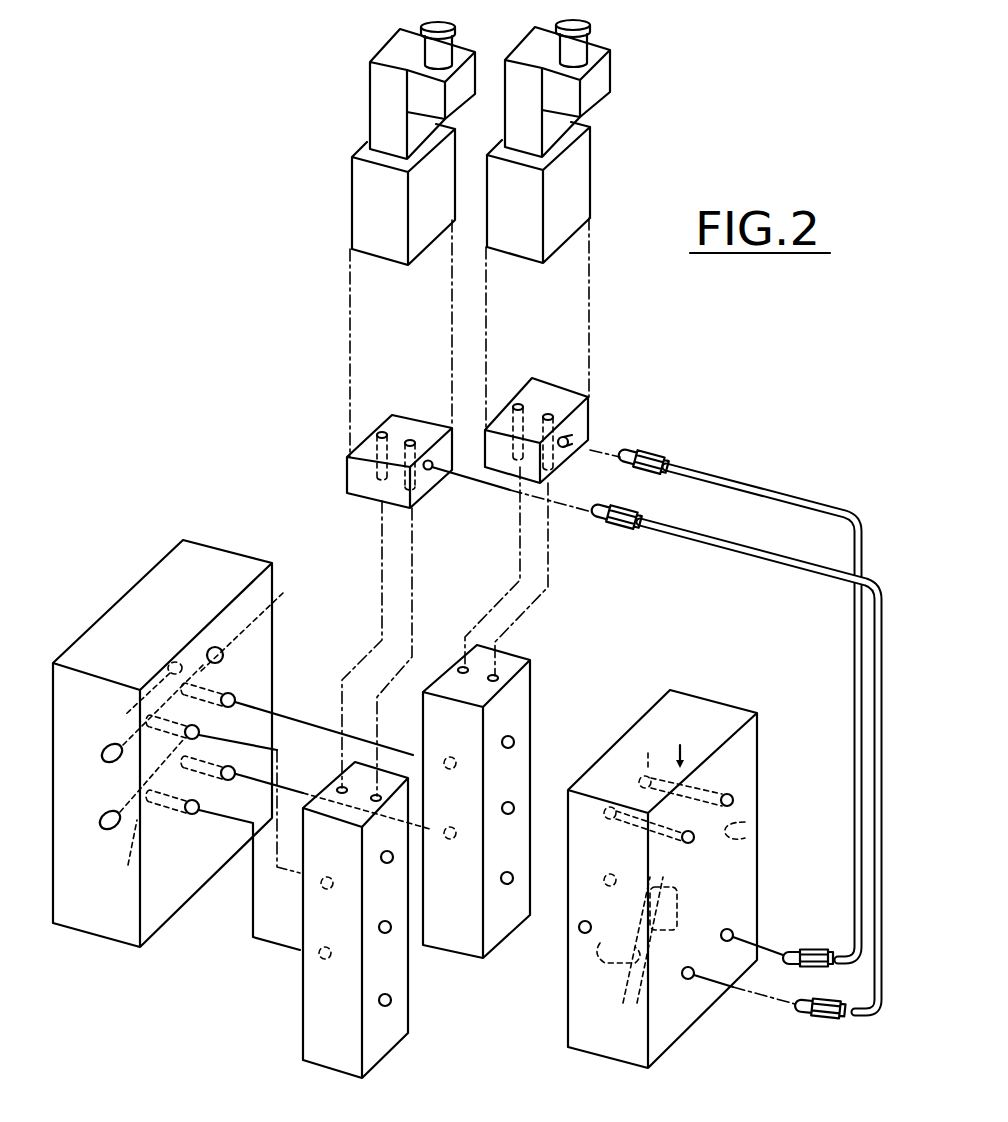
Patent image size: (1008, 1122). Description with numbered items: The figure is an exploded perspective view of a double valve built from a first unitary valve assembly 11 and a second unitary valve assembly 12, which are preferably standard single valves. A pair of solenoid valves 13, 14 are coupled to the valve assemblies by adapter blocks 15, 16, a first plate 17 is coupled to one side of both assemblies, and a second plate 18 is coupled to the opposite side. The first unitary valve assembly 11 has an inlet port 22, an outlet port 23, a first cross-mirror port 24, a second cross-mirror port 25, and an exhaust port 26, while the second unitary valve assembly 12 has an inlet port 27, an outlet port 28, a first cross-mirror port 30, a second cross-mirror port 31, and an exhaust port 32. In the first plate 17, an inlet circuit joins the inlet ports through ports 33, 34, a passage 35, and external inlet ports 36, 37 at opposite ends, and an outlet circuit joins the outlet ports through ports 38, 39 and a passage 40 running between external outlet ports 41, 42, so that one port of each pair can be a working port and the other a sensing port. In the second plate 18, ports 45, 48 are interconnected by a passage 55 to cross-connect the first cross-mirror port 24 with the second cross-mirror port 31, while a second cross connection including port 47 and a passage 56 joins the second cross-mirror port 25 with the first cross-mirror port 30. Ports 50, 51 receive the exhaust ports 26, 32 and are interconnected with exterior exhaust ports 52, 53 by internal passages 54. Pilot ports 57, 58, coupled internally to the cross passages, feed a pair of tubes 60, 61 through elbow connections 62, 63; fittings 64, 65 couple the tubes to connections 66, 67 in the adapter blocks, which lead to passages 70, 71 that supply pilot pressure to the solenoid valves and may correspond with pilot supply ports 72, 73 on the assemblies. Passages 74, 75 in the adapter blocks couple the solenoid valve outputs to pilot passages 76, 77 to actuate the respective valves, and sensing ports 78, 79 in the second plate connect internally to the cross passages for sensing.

The first unitary valve assembly 11 is at (390, 1052).
The second unitary valve assembly 12 is at (487, 948).
The solenoid valve 13 is at (350, 178).
The solenoid valve 14 is at (593, 153).
The adapter block 15 is at (345, 463).
The adapter block 16 is at (570, 387).
The first plate 17 is at (127, 598).
The second plate 18 is at (573, 1057).
The inlet port 22 is at (322, 958).
The outlet port 23 is at (327, 877).
The first cross-mirror port 24 is at (385, 994).
The second cross-mirror port 25 is at (385, 921).
The exhaust port 26 is at (387, 850).
The inlet port 27 is at (450, 827).
The outlet port 28 is at (450, 757).
The first cross-mirror port 30 is at (507, 872).
The second cross-mirror port 31 is at (514, 803).
The exhaust port 32 is at (514, 738).
The port 33 is at (196, 815).
The port 34 is at (236, 772).
The passage 35 is at (120, 860).
The external inlet port 36 is at (100, 828).
The external inlet port 37 is at (236, 698).
The port 38 is at (212, 725).
The port 39 is at (223, 653).
The passage 40 is at (170, 660).
The external outlet port 41 is at (100, 757).
The external outlet port 42 is at (280, 598).
The port 45 is at (585, 973).
The port 47 is at (590, 880).
The port 48 is at (640, 845).
The port 50 is at (623, 784).
The port 51 is at (654, 749).
The exhaust port 52 is at (694, 840).
The exhaust port 53 is at (730, 795).
The internal passages 54 is at (695, 742).
The passage 55 is at (621, 1019).
The passage 56 is at (608, 918).
The pilot port 57 is at (688, 980).
The pilot port 58 is at (727, 929).
The tube 60 is at (874, 637).
The tube 61 is at (834, 508).
The elbow connection 62 is at (827, 1020).
The elbow connection 63 is at (807, 945).
The fitting 64 is at (627, 530).
The fitting 65 is at (657, 452).
The connection 66 is at (430, 470).
The connection 67 is at (580, 435).
The passage 70 is at (411, 440).
The passage 71 is at (548, 413).
The pilot supply port 72 is at (377, 790).
The pilot supply port 73 is at (498, 676).
The passage 74 is at (382, 432).
The passage 75 is at (518, 403).
The pilot passage 76 is at (343, 777).
The pilot passage 77 is at (462, 667).
The sensing port 78 is at (578, 930).
The sensing port 79 is at (773, 800).